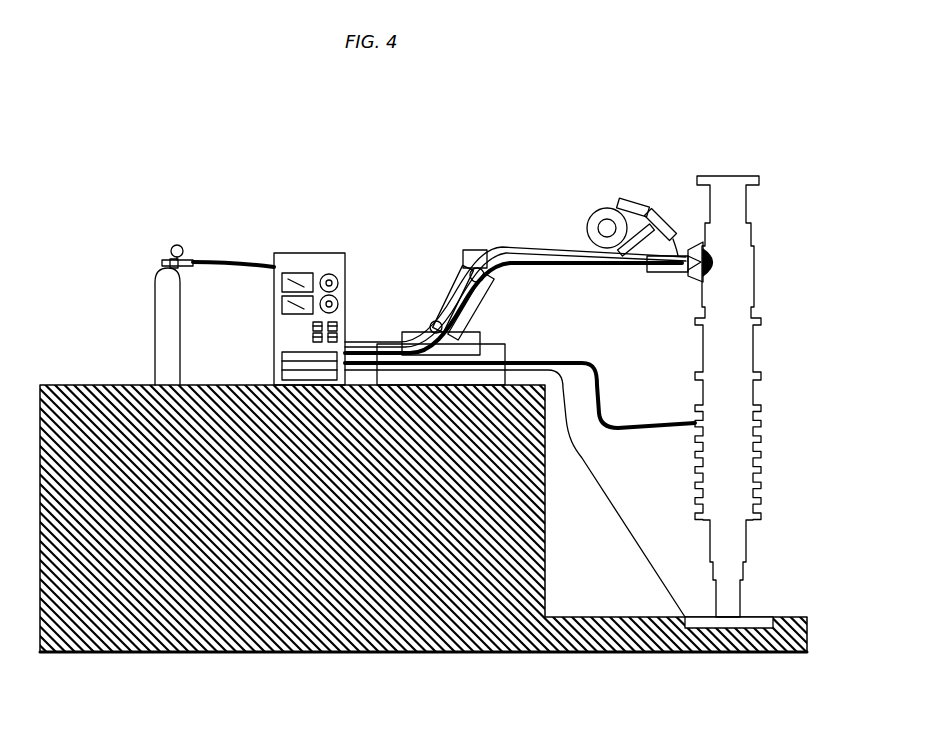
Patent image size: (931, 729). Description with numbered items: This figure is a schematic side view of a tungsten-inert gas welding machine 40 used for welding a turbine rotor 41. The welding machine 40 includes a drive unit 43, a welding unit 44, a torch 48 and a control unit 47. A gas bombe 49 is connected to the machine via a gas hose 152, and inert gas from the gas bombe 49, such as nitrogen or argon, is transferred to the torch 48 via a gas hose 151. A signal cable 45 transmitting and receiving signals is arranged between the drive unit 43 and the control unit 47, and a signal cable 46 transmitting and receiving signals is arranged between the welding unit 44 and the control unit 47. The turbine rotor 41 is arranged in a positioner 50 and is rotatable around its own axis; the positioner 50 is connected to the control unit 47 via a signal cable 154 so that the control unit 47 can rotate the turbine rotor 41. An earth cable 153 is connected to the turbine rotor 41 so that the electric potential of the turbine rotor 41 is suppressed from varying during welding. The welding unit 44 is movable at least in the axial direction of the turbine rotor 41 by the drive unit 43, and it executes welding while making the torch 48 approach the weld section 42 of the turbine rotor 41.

The welding machine 40 is at (512, 158).
The turbine rotor 41 is at (742, 396).
The weld section 42 is at (718, 261).
The drive unit 43 is at (495, 253).
The welding unit 44 is at (592, 248).
The signal cable 45 is at (453, 268).
The signal cable 46 is at (437, 303).
The control unit 47 is at (318, 255).
The torch 48 is at (664, 277).
The gas bombe 49 is at (176, 245).
The positioner 50 is at (762, 616).
The gas hose 151 is at (513, 263).
The gas hose 152 is at (238, 257).
The earth cable 153 is at (548, 361).
The signal cable 154 is at (628, 527).